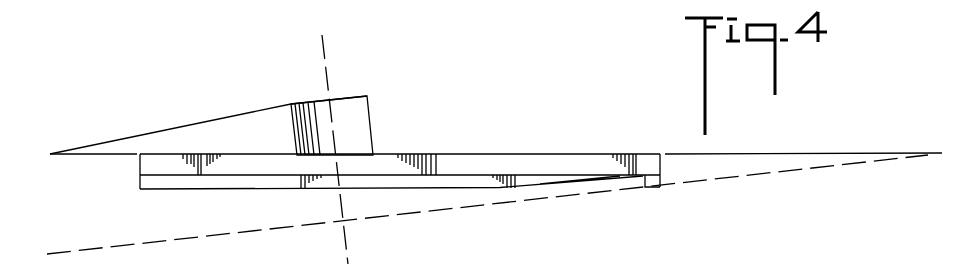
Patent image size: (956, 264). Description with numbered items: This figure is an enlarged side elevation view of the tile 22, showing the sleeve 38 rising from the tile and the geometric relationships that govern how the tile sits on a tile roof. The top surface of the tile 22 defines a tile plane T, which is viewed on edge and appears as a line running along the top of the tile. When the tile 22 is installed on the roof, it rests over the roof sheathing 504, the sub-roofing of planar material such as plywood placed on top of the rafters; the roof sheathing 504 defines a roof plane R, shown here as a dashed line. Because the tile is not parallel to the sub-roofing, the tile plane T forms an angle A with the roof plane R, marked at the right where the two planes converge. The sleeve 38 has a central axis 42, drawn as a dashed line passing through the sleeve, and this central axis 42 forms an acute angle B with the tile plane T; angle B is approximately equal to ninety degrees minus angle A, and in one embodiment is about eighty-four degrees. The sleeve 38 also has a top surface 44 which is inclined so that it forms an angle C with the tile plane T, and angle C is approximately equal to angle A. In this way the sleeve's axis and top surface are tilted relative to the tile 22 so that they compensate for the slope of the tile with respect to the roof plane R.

The tile 22 is at (623, 108).
The sleeve 38 is at (373, 125).
The central axis 42 is at (326, 53).
The top surface 44 is at (345, 98).
The roof sheathing 504 is at (121, 242).
The angle A is at (805, 200).
The angle B is at (325, 73).
The angle C is at (119, 178).
The tile plane T is at (500, 154).
The roof plane R is at (495, 205).